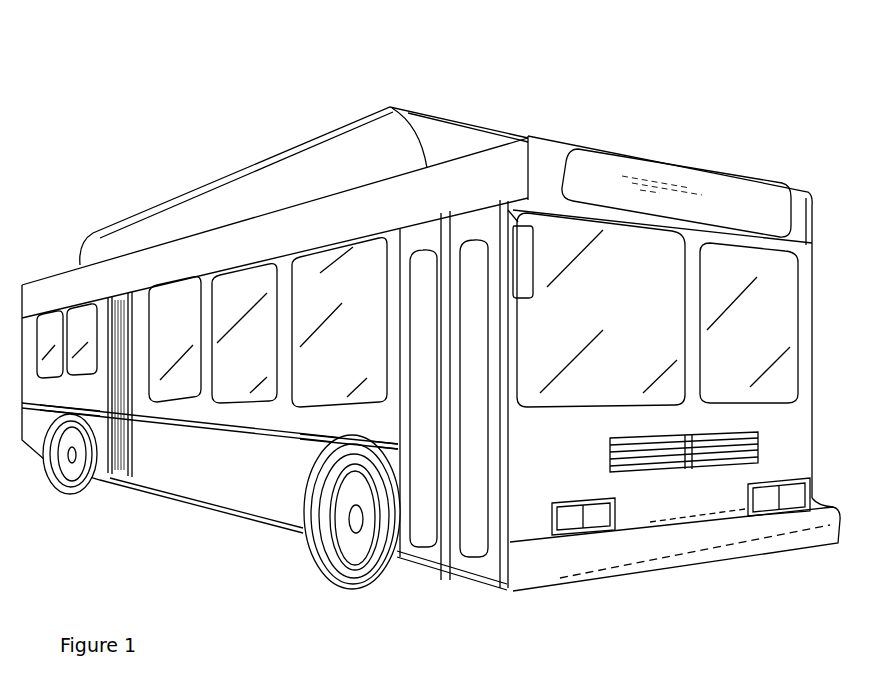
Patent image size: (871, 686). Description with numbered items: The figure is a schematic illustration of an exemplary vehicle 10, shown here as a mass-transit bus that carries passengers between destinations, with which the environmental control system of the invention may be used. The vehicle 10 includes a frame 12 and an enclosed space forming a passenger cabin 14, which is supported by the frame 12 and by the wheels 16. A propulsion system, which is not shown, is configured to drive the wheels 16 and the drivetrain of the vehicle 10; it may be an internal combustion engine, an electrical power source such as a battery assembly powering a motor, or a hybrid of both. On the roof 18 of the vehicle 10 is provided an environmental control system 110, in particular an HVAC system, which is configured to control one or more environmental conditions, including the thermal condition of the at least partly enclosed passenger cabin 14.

The vehicle 10 is at (672, 48).
The frame 12 is at (197, 475).
The passenger cabin 14 is at (165, 306).
The wheels 16 is at (63, 487).
The roof 18 is at (727, 163).
The environmental control system 110 is at (300, 180).